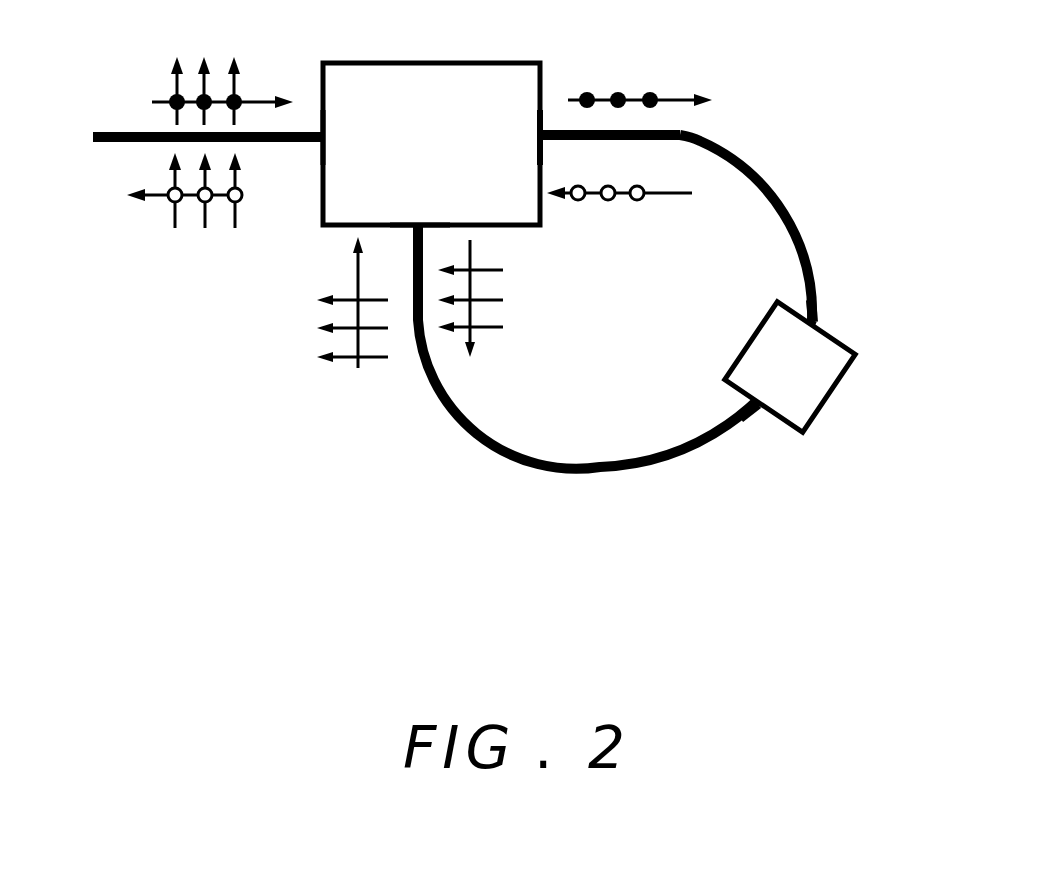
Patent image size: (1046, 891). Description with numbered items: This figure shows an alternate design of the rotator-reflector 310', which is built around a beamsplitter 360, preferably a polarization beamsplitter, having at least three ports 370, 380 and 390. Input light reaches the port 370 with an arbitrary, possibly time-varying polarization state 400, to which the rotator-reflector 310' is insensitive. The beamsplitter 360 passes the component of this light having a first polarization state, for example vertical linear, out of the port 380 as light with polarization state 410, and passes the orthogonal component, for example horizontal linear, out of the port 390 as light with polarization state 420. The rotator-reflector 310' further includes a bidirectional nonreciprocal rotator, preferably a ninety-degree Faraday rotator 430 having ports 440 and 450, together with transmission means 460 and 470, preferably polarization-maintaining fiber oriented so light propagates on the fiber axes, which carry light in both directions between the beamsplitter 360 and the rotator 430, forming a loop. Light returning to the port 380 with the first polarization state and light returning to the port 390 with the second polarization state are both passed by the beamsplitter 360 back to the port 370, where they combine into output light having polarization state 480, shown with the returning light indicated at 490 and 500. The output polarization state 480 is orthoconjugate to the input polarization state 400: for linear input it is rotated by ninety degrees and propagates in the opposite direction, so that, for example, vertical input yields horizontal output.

The rotator-reflector 310' is at (339, 605).
The beamsplitter 360 is at (440, 83).
The port 370 is at (359, 137).
The port 380 is at (417, 204).
The port 390 is at (500, 137).
The polarization state 400 is at (205, 67).
The polarization state 410 is at (493, 298).
The polarization state 420 is at (585, 95).
The 90° Faraday rotator 430 is at (810, 393).
The port 440 is at (760, 410).
The port 450 is at (820, 330).
The transmission means 460 is at (580, 473).
The transmission means 470 is at (757, 170).
The polarization state 480 is at (190, 202).
The light beam L2i 490 is at (347, 358).
The light beam L3i 500 is at (640, 202).